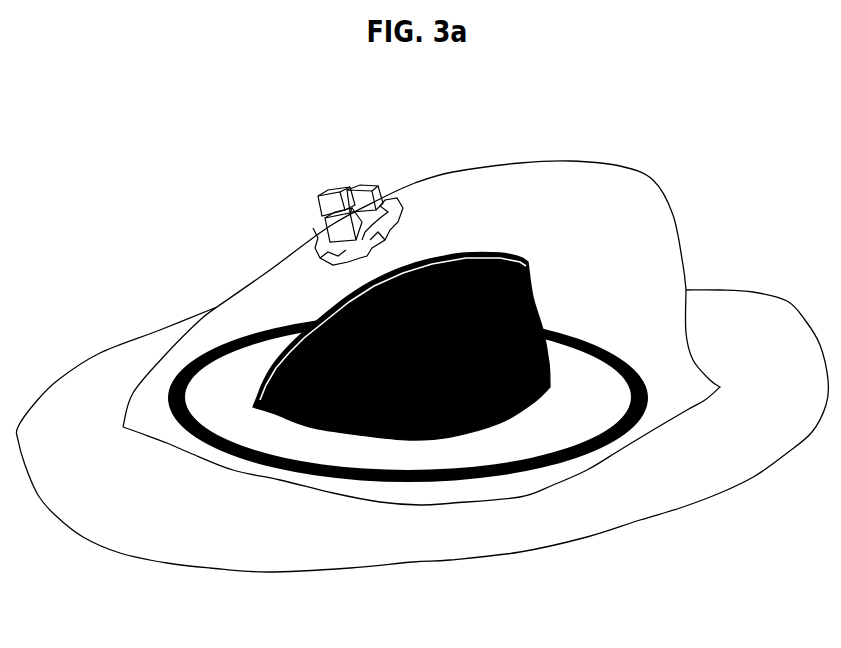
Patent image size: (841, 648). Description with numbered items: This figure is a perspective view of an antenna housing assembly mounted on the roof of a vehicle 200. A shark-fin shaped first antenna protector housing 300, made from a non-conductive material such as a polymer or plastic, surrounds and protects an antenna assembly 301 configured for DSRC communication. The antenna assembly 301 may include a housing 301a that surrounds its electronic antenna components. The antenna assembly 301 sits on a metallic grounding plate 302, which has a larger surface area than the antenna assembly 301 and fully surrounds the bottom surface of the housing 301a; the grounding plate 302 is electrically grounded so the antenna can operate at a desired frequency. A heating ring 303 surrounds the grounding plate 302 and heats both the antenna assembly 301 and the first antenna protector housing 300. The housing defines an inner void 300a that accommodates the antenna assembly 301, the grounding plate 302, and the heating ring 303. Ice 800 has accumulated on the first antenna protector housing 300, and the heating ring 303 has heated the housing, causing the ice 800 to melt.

The vehicle 200 is at (263, 573).
The first antenna protector housing 300 is at (580, 152).
The inner void 300a is at (607, 284).
The antenna assembly 301 is at (513, 245).
The housing 301a is at (445, 252).
The metallic grounding plate 302 is at (219, 403).
The heating ring 303 is at (194, 347).
The ice 800 is at (343, 185).